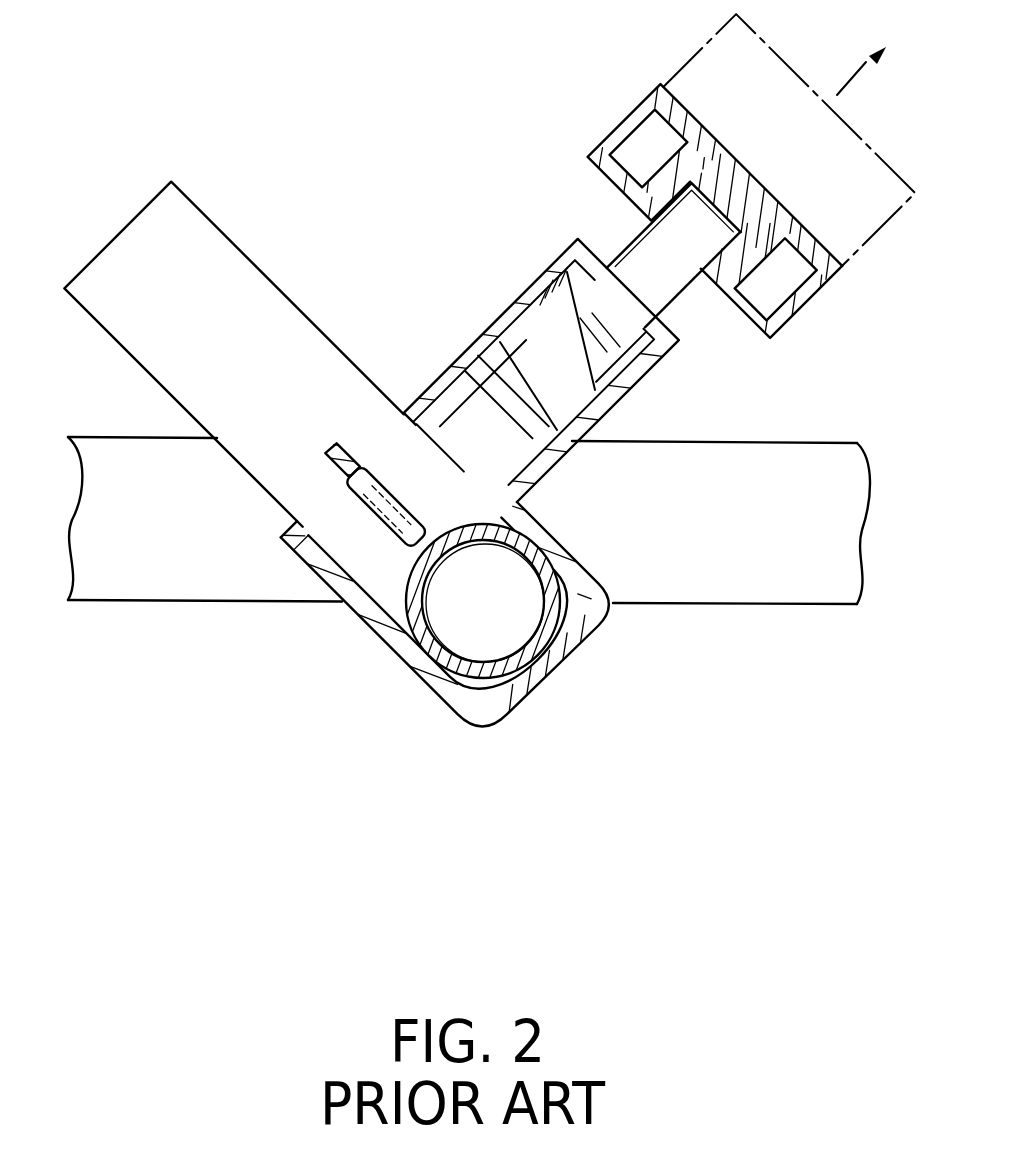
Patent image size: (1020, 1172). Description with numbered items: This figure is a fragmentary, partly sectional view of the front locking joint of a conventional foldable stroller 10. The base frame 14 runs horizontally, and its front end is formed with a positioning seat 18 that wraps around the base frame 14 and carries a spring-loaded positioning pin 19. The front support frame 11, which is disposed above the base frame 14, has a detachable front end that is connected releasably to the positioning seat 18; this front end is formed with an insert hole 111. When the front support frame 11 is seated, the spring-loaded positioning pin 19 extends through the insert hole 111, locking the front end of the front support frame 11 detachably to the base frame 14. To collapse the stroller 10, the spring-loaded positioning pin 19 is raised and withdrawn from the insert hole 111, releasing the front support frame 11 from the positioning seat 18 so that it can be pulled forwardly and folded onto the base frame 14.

The foldable stroller 10 is at (245, 317).
The front support frame 11 is at (267, 293).
The insert hole 111 is at (342, 476).
The base frame 14 is at (657, 567).
The positioning seat 18 is at (662, 342).
The spring-loaded positioning pin 19 is at (905, 225).